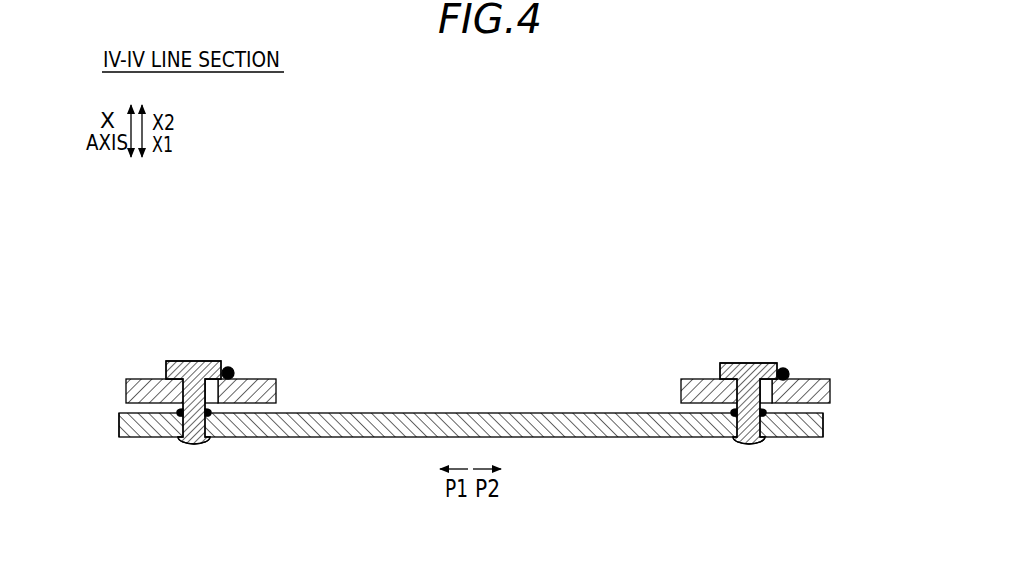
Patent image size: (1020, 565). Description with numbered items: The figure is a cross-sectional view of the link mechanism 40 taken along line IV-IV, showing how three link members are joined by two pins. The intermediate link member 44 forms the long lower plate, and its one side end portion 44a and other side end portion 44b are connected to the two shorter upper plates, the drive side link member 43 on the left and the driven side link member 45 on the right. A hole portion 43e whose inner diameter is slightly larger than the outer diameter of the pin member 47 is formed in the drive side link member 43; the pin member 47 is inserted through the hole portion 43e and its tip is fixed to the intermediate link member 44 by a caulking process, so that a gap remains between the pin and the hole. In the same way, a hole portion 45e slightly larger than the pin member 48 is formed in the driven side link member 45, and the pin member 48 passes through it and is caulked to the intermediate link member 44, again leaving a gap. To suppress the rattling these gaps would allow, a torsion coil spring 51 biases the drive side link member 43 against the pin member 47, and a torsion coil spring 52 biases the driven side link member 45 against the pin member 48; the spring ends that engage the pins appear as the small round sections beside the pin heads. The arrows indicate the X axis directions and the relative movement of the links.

The link mechanism 40 is at (733, 168).
The drive side link member 43 is at (225, 318).
The hole portion 43e is at (211, 390).
The intermediate link member 44 is at (460, 413).
The one side end portion of intermediate link member 44a is at (153, 437).
The other side end portion of intermediate link member 44b is at (796, 437).
The driven side link member 45 is at (773, 318).
The hole portion 45e is at (766, 390).
The pin member 47 is at (178, 361).
The pin member 48 is at (733, 363).
The torsion coil spring 51 is at (229, 367).
The torsion coil spring 52 is at (785, 368).